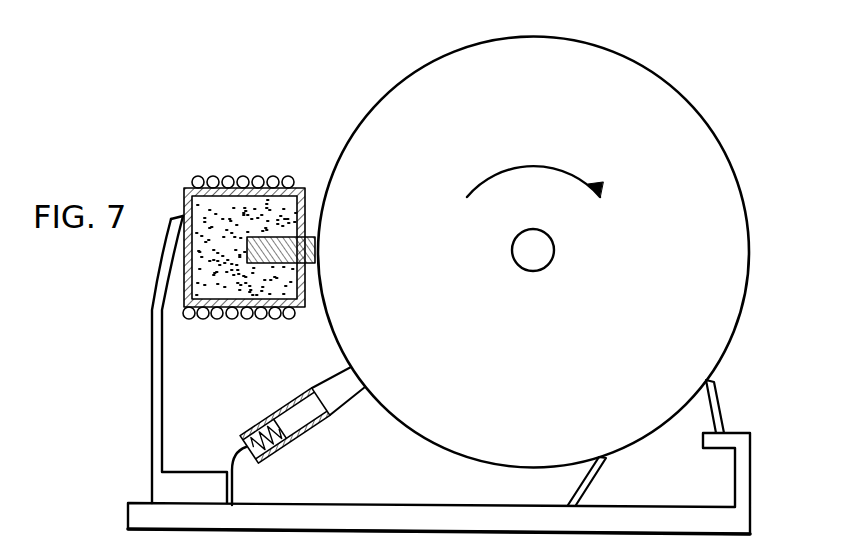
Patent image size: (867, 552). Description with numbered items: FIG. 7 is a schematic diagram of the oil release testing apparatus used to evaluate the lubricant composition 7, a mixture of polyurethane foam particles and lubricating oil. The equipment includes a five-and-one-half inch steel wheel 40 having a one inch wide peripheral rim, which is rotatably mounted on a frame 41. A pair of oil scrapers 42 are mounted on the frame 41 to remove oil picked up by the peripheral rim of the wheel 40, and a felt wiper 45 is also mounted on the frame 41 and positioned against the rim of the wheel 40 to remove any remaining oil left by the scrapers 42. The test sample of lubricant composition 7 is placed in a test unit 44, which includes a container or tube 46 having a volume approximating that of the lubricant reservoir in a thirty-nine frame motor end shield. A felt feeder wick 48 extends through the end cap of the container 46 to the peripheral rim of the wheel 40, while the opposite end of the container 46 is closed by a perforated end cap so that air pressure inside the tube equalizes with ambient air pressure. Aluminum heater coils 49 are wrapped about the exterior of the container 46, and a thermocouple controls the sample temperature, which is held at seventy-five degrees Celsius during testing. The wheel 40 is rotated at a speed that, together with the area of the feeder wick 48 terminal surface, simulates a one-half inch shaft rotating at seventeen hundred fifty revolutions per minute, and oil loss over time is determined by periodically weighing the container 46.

The lubricant composition 7 is at (203, 204).
The steel wheel 40 is at (682, 112).
The frame 41 is at (430, 506).
The oil scrapers 42 is at (593, 487).
The test unit 44 is at (233, 220).
The felt wiper 45 is at (328, 392).
The container 46 is at (192, 186).
The felt feeder wick 48 is at (317, 252).
The aluminum heater coils 49 is at (245, 176).